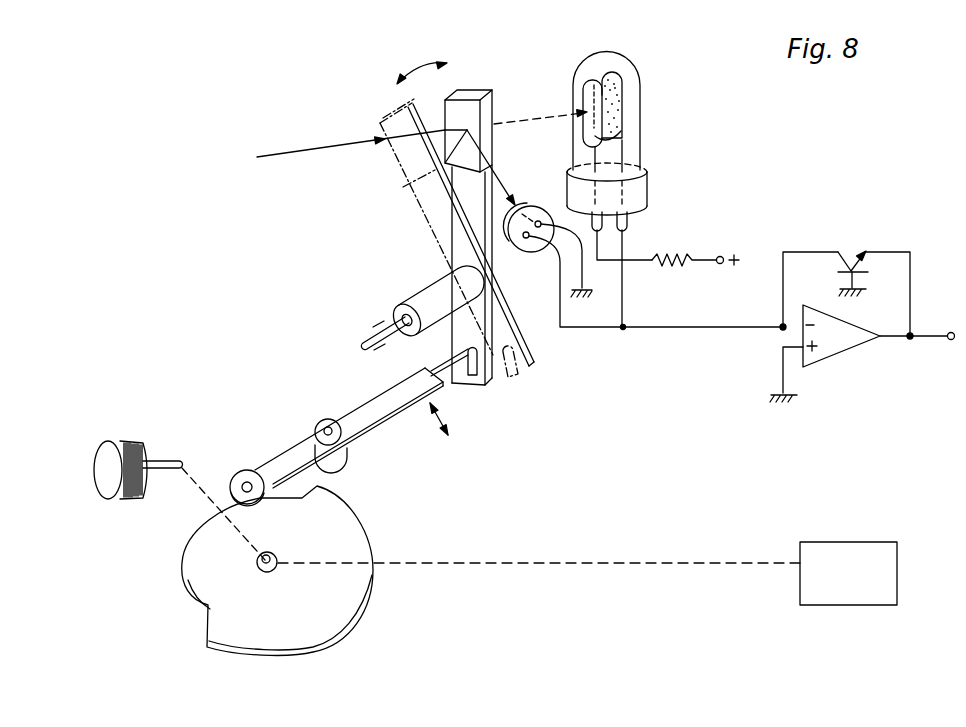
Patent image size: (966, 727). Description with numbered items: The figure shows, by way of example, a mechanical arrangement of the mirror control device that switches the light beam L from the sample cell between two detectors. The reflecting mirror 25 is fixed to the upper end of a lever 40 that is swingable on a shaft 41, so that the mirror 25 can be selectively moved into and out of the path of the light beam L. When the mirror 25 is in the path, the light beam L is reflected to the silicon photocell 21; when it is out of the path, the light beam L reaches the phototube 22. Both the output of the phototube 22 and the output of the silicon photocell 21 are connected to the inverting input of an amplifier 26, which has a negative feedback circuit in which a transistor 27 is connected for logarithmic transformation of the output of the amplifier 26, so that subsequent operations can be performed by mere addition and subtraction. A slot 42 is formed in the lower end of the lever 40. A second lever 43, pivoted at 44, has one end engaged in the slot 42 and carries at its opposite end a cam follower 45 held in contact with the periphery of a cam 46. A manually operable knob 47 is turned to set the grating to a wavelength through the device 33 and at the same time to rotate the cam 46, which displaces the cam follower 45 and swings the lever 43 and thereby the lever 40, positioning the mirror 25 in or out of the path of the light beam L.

The light beam L is at (273, 153).
The silicon photocell 21 is at (526, 207).
The phototube 22 is at (636, 63).
The reflecting mirror 25 is at (467, 108).
The amplifier 26 is at (858, 362).
The transistor 27 is at (849, 250).
The device 33 is at (851, 543).
The lever 40 is at (472, 202).
The shaft 41 is at (420, 303).
The slot 42 is at (470, 380).
The lever 43 is at (388, 407).
The pivot 44 is at (328, 420).
The cam follower 45 is at (248, 471).
The cam 46 is at (358, 526).
The manually operable knob 47 is at (118, 440).